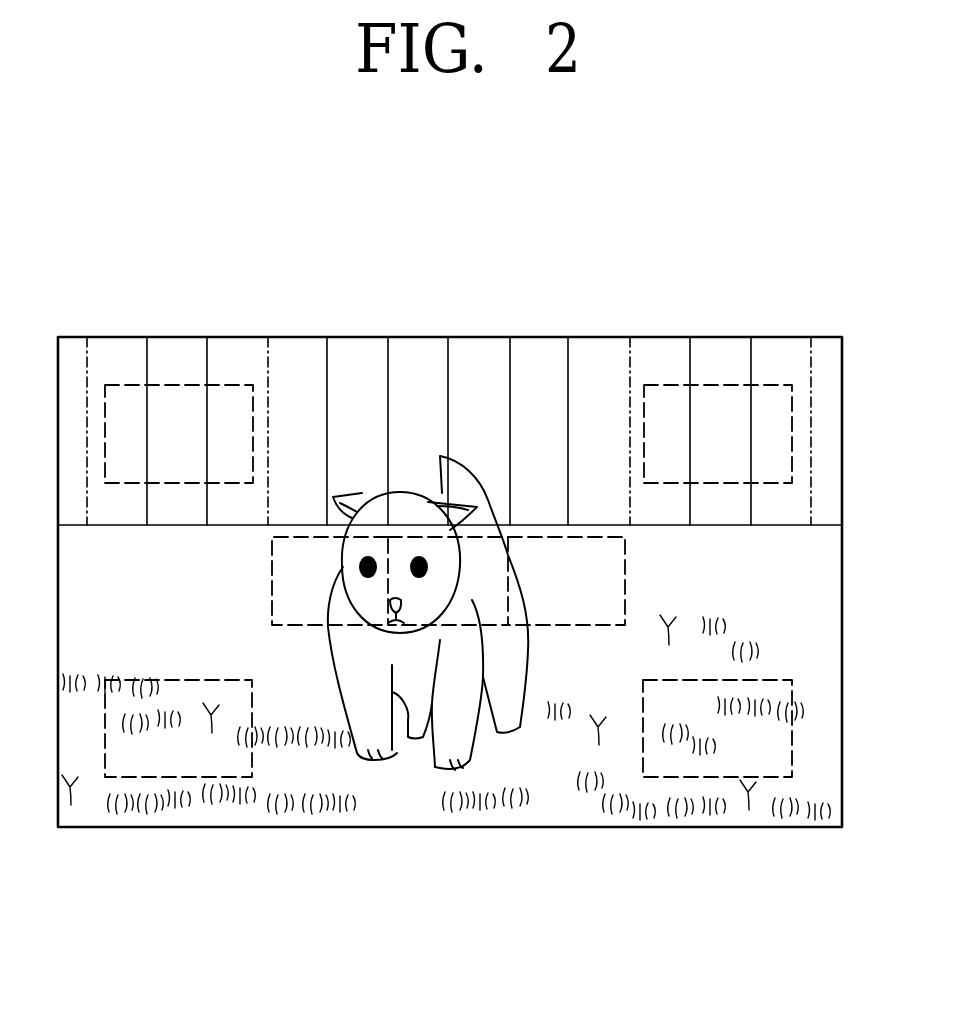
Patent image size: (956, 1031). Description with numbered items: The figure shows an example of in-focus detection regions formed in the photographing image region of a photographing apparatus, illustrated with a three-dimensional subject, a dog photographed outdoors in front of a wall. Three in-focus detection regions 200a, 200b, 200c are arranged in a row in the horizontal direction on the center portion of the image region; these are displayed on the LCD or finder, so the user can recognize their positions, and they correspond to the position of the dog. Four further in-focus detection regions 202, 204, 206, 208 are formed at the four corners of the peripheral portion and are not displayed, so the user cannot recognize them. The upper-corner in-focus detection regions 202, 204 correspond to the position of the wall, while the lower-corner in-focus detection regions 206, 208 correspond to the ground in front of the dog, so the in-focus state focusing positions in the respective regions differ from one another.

The in-focus detection region 202 is at (173, 383).
The in-focus detection region 204 is at (716, 383).
The in-focus detection region 200a is at (298, 537).
The in-focus detection region 200b is at (412, 537).
The in-focus detection region 200c is at (538, 537).
The in-focus detection region 206 is at (213, 780).
The in-focus detection region 208 is at (752, 778).